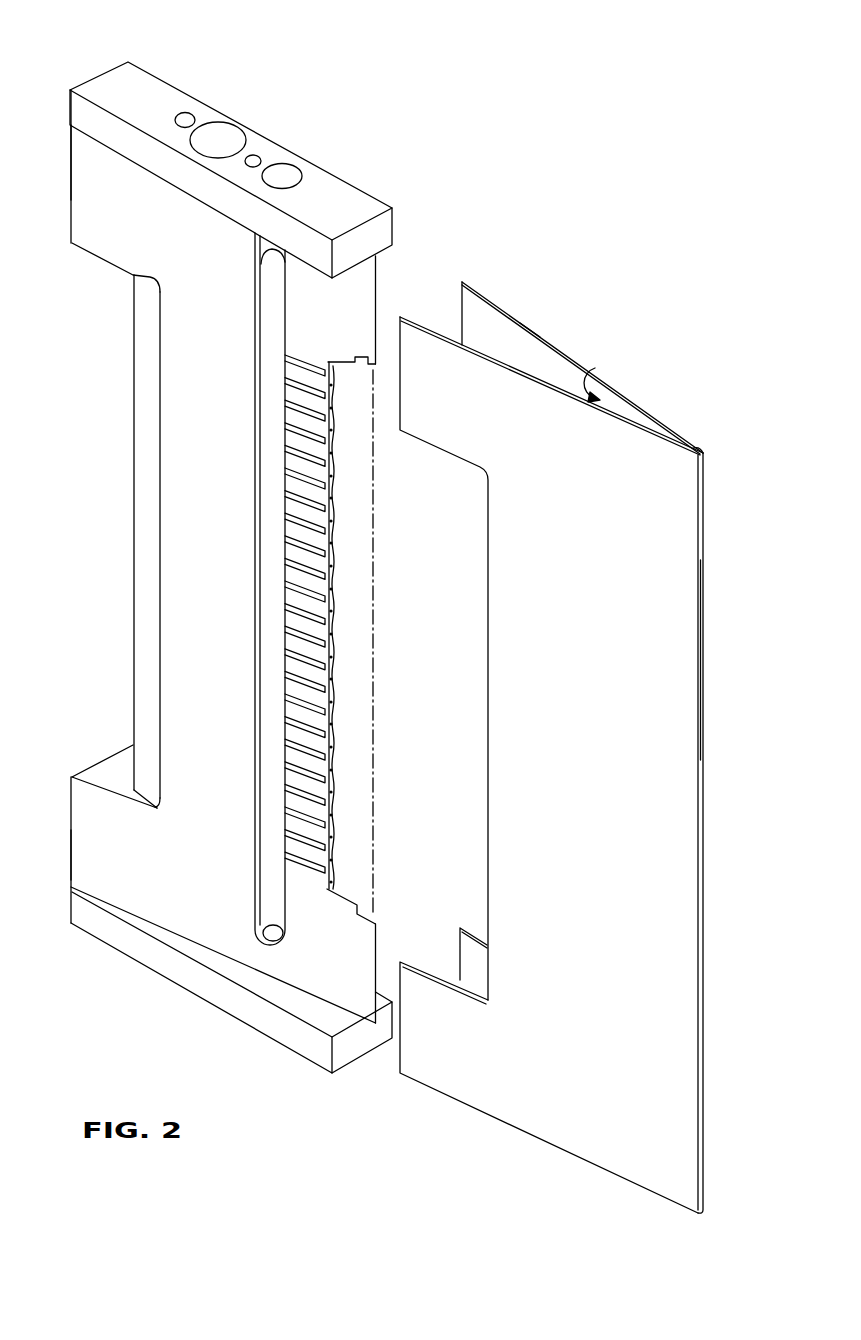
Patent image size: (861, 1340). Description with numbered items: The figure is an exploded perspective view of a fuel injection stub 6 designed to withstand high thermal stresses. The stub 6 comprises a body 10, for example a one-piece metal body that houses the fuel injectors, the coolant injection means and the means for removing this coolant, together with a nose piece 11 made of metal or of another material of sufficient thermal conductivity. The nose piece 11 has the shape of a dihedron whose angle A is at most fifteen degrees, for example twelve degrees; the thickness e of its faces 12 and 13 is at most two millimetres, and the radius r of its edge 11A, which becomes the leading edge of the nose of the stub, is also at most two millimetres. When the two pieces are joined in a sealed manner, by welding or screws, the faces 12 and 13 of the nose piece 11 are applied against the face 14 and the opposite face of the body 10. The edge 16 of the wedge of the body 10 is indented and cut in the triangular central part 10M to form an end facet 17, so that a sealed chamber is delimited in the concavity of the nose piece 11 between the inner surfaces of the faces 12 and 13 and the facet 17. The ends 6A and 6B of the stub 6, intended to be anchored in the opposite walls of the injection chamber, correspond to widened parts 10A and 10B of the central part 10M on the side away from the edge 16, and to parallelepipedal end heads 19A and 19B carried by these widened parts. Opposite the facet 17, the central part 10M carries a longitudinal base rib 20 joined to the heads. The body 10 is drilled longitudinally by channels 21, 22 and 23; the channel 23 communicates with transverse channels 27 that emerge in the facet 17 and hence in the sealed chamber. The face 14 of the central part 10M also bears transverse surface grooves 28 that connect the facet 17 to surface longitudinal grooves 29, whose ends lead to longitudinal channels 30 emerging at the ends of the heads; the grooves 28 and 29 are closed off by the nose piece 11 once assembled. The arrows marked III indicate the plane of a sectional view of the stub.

The injection stub 6 is at (548, 280).
The end of the stub 6A is at (50, 170).
The end of the stub 6B is at (52, 856).
The body 10 is at (118, 408).
The widened part 10A is at (105, 220).
The widened part 10B is at (97, 805).
The central part 10M is at (192, 462).
The nose piece 11 is at (636, 826).
The edge 11A is at (710, 683).
The face 12 is at (478, 1080).
The face 13 is at (637, 402).
The face 14 is at (203, 928).
The edge of the wedge 16 is at (376, 297).
The end facet 17 is at (333, 580).
The end head 19A is at (157, 92).
The end head 19B is at (340, 1053).
The longitudinal base rib 20 is at (148, 315).
The channel 21 is at (185, 114).
The channel 22 is at (225, 133).
The channel 23 is at (260, 157).
The transverse channels 27 is at (333, 787).
The transverse surface grooves 28 is at (297, 618).
The surface longitudinal grooves 29 is at (272, 552).
The longitudinal channels 30 is at (290, 172).
The angle A is at (595, 368).
The thickness e is at (515, 340).
The radius r is at (712, 447).
The section line III is at (83, 52).